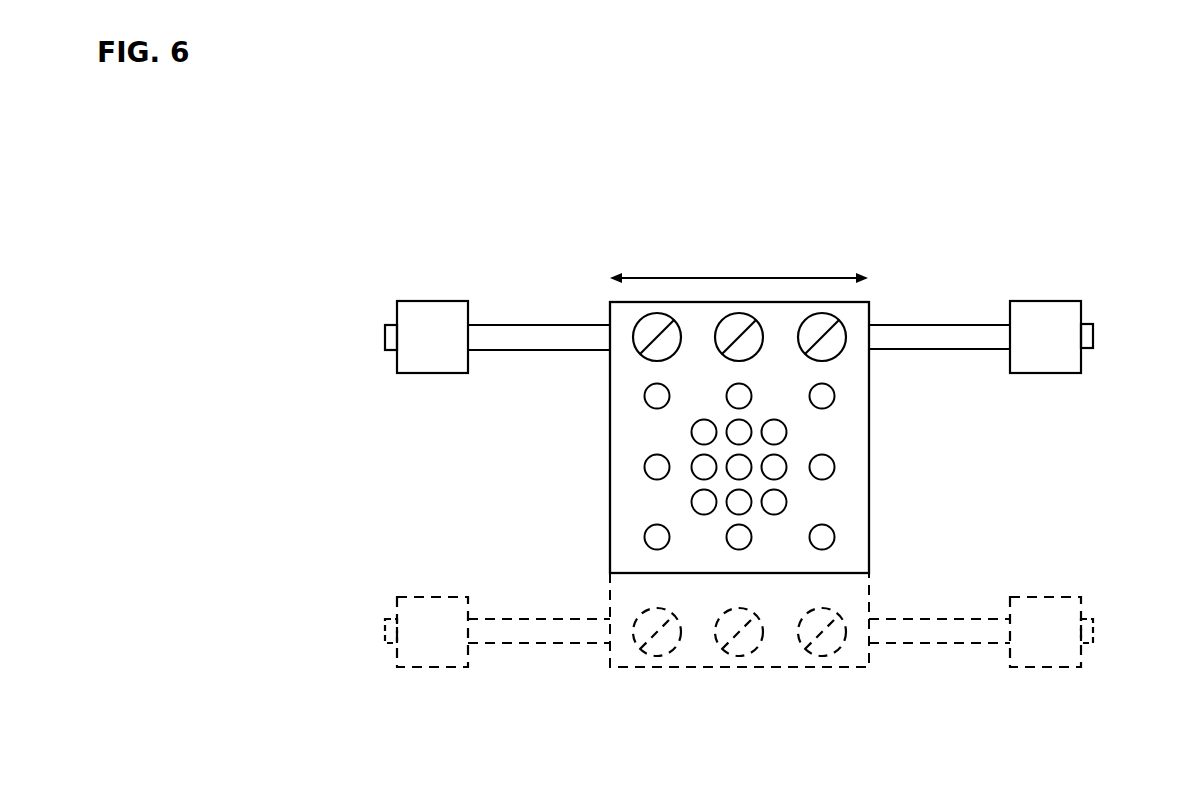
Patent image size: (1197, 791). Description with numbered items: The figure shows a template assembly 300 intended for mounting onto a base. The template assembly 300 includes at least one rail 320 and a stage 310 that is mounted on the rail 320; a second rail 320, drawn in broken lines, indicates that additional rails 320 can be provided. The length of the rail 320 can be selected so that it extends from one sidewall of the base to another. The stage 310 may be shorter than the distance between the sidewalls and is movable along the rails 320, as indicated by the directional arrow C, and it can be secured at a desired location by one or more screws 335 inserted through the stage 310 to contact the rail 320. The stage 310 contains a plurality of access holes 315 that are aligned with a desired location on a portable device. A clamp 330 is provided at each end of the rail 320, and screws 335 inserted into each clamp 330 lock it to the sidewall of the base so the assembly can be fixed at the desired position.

The template assembly 300 is at (940, 99).
The stage 310 is at (870, 502).
The access holes 315 is at (644, 397).
The rail 320 is at (538, 324).
The clamp 330 is at (433, 301).
The screws 335 is at (385, 337).